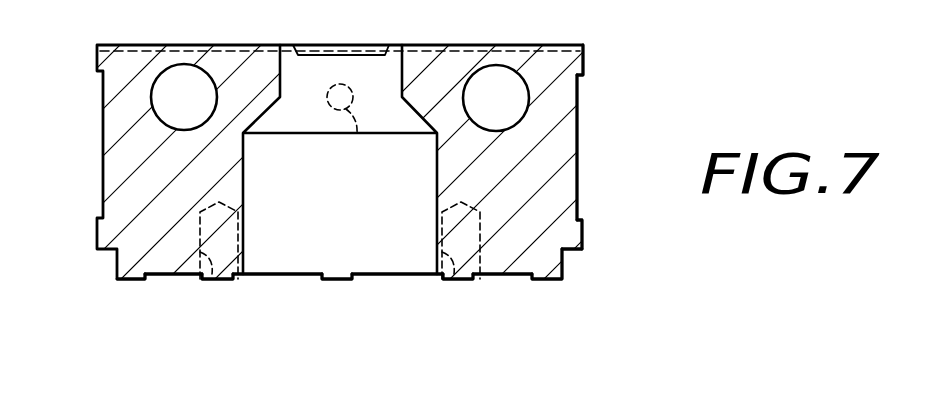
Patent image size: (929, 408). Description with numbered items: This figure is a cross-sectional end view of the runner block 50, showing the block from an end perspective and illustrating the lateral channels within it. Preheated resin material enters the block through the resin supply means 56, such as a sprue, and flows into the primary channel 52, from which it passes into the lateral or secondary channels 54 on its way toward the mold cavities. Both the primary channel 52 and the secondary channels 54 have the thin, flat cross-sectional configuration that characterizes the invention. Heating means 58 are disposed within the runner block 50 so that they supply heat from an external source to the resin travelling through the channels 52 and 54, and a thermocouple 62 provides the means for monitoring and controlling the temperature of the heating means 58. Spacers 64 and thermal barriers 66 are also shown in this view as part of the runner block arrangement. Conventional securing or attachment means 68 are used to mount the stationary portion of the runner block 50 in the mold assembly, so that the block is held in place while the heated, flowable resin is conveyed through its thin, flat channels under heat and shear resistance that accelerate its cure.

The runner block 50 is at (100, 170).
The primary channel 52 is at (347, 45).
The lateral or secondary channels 54 is at (195, 50).
The resin supply means 56 is at (307, 257).
The heating means 58 is at (160, 87).
The thermocouple 62 is at (357, 133).
The spacers 64 is at (585, 62).
The thermal barriers 66 is at (579, 150).
The securing or attachment means 68 is at (210, 282).